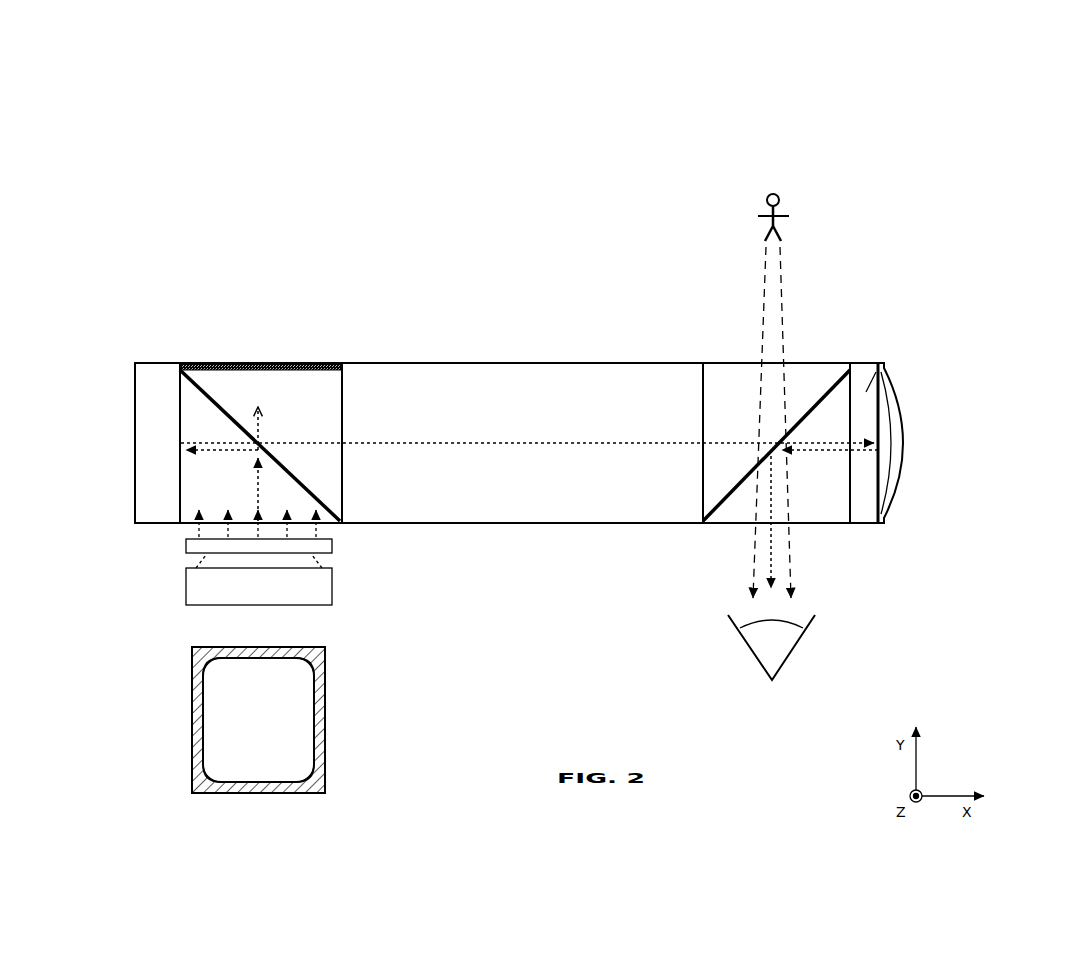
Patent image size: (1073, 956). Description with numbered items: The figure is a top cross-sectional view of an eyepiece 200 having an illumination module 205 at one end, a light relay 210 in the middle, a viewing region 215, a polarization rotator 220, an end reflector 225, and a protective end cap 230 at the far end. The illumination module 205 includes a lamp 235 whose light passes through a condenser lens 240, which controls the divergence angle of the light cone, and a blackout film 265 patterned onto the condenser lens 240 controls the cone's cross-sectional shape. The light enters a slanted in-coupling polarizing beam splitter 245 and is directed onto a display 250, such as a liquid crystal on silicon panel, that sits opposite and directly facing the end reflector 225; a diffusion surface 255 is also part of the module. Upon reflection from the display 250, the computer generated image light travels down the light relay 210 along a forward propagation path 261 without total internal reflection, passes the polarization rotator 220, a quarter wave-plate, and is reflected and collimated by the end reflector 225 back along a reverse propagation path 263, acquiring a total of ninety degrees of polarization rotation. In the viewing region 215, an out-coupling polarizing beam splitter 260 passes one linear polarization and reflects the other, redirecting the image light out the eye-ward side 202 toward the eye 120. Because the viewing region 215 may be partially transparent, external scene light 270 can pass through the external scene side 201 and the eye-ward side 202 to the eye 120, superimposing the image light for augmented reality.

The eyepiece 200 is at (152, 95).
The external scene side 201 is at (513, 292).
The eye-ward side 202 is at (505, 594).
The illumination module 205 is at (343, 195).
The light relay 210 is at (368, 362).
The viewing region 215 is at (852, 195).
The polarization rotator 220 is at (870, 363).
The end reflector 225 is at (884, 500).
The protective end cap 230 is at (912, 440).
The lamp 235 is at (259, 580).
The condenser lens 240 is at (158, 700).
The in-coupling polarizing beam splitter 245 is at (228, 404).
The display 250 is at (150, 362).
The diffusion surface 255 is at (225, 362).
The out-coupling polarizing beam splitter 260 is at (836, 368).
The forward propagation path 261 is at (418, 447).
The reverse propagation path 263 is at (798, 453).
The blackout film 265 is at (320, 780).
The external scene light 270 is at (757, 306).
The eye 120 is at (771, 647).